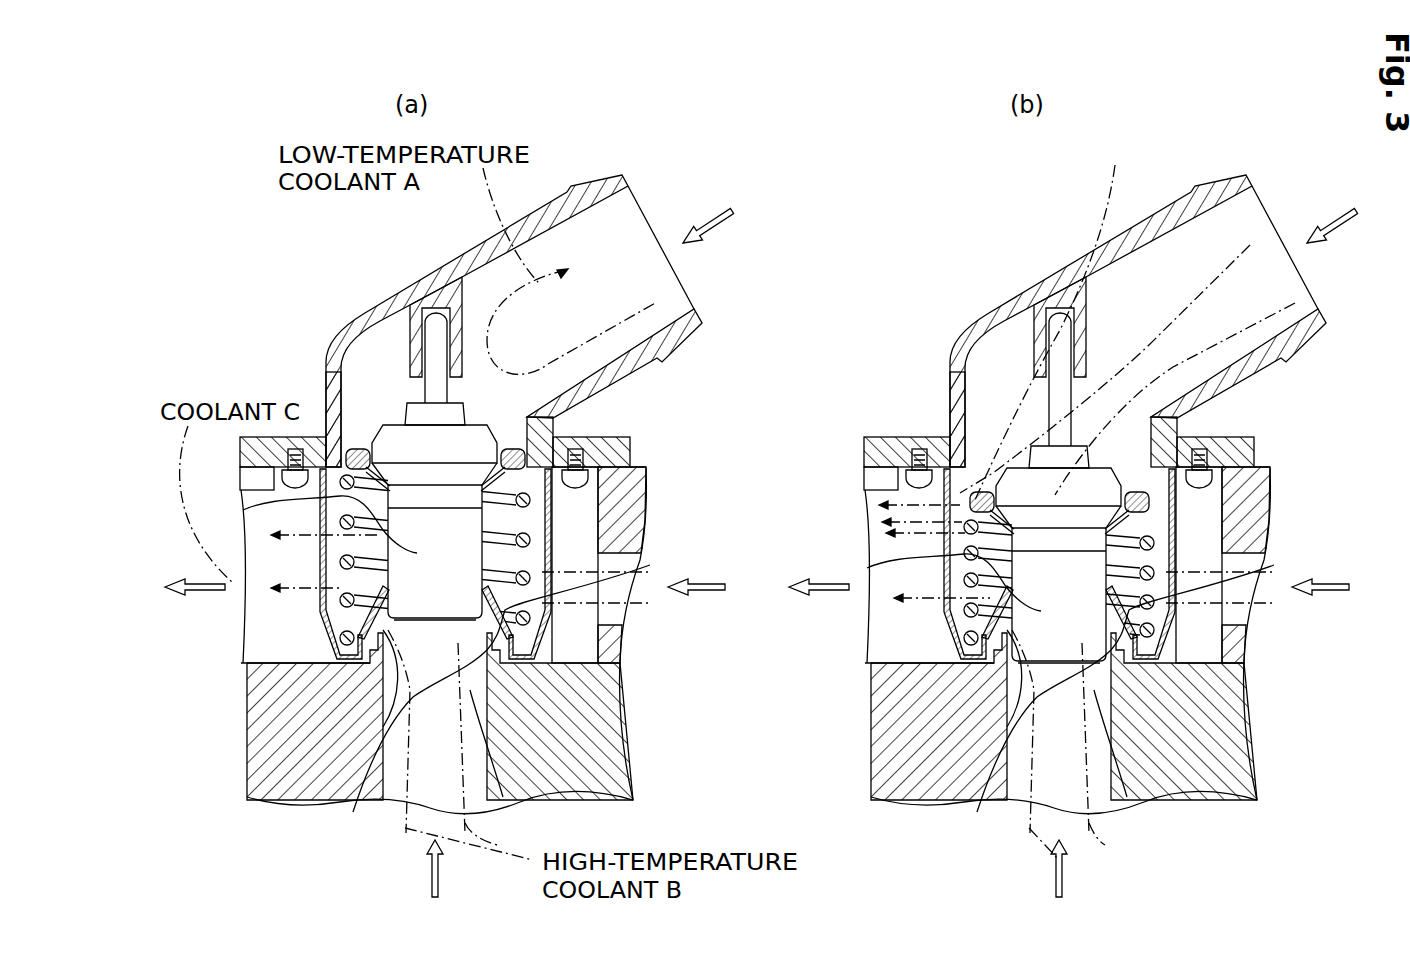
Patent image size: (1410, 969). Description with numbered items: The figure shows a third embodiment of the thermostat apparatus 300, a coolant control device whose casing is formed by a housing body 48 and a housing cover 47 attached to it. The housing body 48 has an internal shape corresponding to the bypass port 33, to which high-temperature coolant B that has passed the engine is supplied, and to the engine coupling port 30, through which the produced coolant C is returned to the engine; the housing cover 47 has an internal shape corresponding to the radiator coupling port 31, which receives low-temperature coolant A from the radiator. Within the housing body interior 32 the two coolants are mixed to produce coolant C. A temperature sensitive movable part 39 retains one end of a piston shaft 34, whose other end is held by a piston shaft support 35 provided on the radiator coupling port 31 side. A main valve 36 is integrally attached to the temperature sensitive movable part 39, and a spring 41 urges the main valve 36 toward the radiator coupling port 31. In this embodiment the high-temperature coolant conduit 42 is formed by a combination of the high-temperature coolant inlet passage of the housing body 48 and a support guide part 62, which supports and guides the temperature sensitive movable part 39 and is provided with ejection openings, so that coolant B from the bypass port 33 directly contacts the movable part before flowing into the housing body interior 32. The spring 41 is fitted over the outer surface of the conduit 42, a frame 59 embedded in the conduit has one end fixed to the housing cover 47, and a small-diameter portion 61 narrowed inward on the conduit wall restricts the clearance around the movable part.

The thermostat apparatus 300 is at (300, 345).
The housing cover 47 is at (586, 183).
The piston shaft support 35 is at (423, 300).
The piston shaft 34 is at (436, 318).
The radiator coupling port 31 is at (553, 403).
The main valve 36 is at (328, 402).
The engine coupling port 30 is at (260, 631).
The frame 59 is at (610, 497).
The housing body interior 32 is at (592, 520).
The housing body 48 is at (600, 750).
The bypass port 33 is at (477, 750).
The small-diameter portion 61 is at (358, 803).
The high-temperature coolant conduit 42 is at (262, 676).
The spring 41 is at (540, 640).
The temperature sensitive movable part 39 is at (310, 497).
The support guide part 62 is at (372, 585).